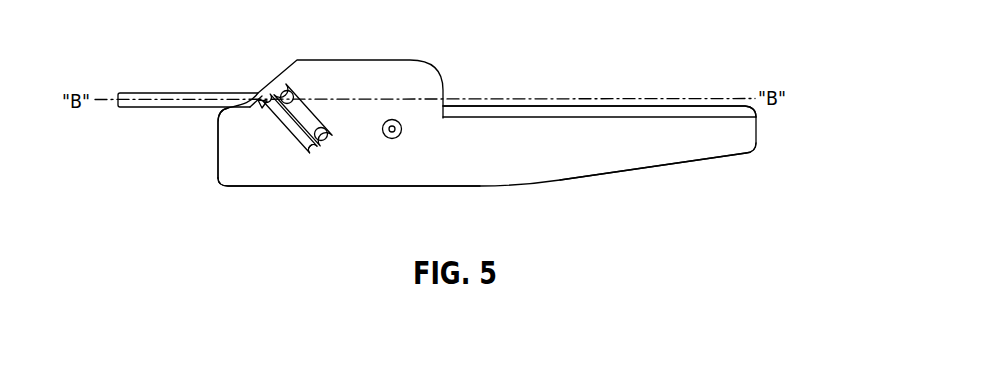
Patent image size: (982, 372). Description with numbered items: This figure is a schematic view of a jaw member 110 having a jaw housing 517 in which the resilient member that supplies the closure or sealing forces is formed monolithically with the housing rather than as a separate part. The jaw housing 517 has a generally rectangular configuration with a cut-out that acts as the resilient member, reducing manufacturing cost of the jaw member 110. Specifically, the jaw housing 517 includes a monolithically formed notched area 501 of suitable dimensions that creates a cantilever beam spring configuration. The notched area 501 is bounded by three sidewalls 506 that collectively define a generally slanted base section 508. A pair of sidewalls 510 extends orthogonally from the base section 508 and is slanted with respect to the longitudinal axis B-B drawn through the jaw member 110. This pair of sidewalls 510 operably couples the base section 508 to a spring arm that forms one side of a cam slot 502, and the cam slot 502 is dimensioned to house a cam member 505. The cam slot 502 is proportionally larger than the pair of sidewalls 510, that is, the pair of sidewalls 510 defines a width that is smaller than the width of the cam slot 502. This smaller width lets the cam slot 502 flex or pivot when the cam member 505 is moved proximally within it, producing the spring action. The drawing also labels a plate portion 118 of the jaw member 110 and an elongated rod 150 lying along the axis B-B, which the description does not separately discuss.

The jaw member 110 is at (648, 55).
The housing plate 118 is at (752, 107).
The actuation rod 150 is at (150, 92).
The notched area 501 is at (317, 147).
The cam slot 502 is at (315, 120).
The cam member 505 is at (288, 90).
The sidewalls 506 is at (298, 142).
The base section 508 is at (228, 186).
The pair of sidewalls 510 is at (270, 97).
The jaw housing 517 is at (716, 158).